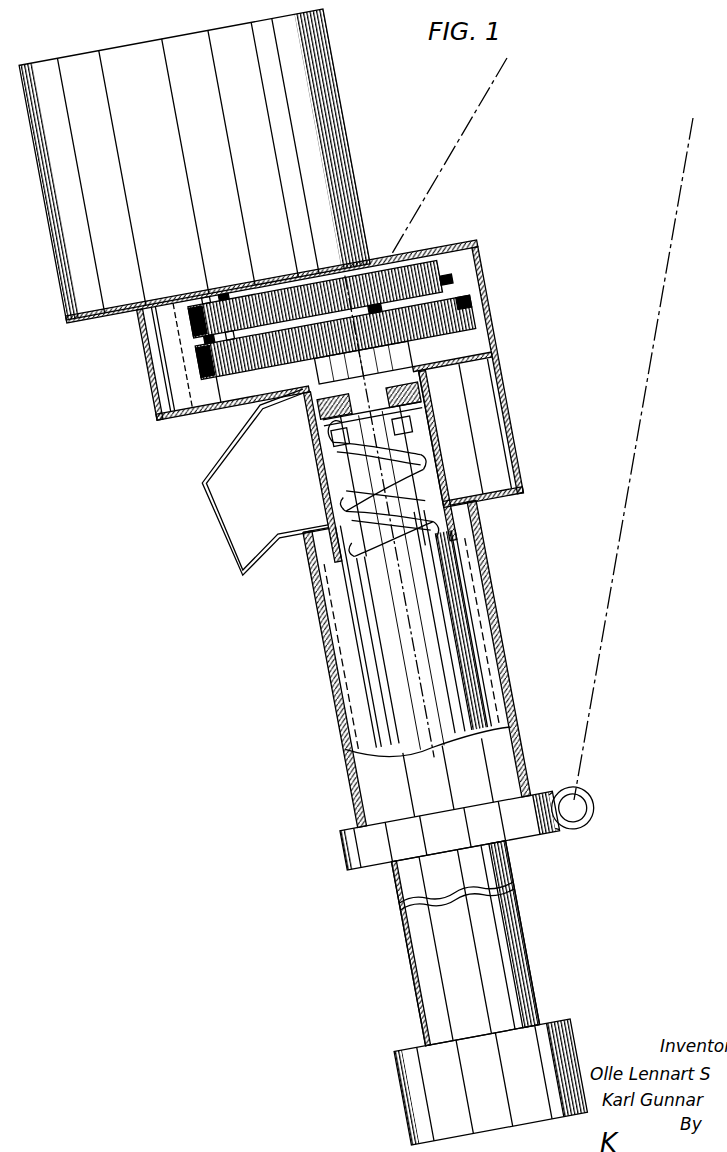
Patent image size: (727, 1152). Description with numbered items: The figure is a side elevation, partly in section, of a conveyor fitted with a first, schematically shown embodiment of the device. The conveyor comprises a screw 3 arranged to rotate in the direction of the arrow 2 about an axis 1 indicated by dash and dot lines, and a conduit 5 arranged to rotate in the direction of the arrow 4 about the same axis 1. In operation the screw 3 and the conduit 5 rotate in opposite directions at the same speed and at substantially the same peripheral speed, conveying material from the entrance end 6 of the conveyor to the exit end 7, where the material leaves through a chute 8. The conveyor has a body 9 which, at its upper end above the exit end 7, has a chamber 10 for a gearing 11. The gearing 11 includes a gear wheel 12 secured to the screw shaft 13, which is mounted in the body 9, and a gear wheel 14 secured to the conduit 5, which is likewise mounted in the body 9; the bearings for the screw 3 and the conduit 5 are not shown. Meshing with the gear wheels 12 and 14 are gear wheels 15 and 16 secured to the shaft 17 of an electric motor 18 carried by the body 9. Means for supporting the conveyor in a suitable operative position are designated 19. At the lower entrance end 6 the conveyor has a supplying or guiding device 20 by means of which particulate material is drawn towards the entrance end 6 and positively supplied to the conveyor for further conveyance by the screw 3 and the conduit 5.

The axis 1 is at (410, 640).
The arrow 2 is at (372, 566).
The screw 3 is at (426, 536).
The arrow 4 is at (412, 706).
The conduit 5 is at (478, 717).
The entrance end 6 is at (525, 975).
The exit end 7 is at (509, 440).
The chute 8 is at (230, 553).
The body 9 is at (507, 678).
The chamber 10 is at (476, 284).
The gearing 11 is at (481, 323).
The gear wheel 12 is at (430, 272).
The screw shaft 13 is at (380, 266).
The gear wheel 14 is at (469, 310).
The gear wheel 15 is at (198, 330).
The gear wheel 16 is at (202, 363).
The shaft 17 is at (231, 275).
The electric motor 18 is at (344, 120).
The supporting means 19 is at (582, 752).
The supplying or guiding device 20 is at (561, 1013).